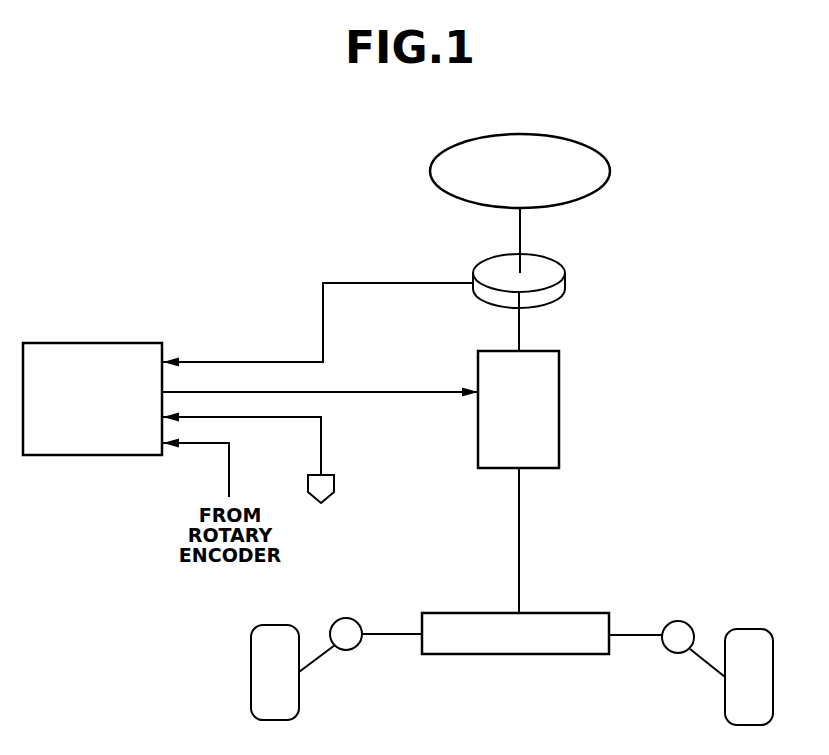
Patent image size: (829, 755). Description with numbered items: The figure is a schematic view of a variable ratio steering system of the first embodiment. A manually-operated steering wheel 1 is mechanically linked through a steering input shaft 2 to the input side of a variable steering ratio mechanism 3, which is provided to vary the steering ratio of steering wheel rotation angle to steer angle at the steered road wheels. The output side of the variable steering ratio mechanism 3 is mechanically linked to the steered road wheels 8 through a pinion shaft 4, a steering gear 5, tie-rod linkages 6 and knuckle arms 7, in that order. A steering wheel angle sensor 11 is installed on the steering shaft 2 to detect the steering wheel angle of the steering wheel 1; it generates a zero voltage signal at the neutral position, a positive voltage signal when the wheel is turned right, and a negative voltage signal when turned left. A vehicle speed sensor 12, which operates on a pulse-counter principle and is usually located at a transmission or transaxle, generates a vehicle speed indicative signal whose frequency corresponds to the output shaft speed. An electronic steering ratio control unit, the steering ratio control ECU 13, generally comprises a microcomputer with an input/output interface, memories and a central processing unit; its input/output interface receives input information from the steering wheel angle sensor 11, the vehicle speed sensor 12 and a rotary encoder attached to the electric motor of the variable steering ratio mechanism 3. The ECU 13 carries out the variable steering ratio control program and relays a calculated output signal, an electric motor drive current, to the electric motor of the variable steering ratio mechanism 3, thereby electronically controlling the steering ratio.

The steering wheel 1 is at (610, 165).
The steering input shaft 2 is at (521, 232).
The steering wheel angle sensor 11 is at (556, 266).
The variable steering ratio mechanism 3 is at (552, 403).
The pinion shaft 4 is at (520, 520).
The steering gear 5 is at (555, 629).
The tie-rod linkages 6 is at (633, 631).
The knuckle arms 7 is at (708, 665).
The steered road wheels 8 is at (745, 628).
The vehicle speed sensor 12 is at (336, 485).
The steering ratio control ECU 13 is at (92, 440).